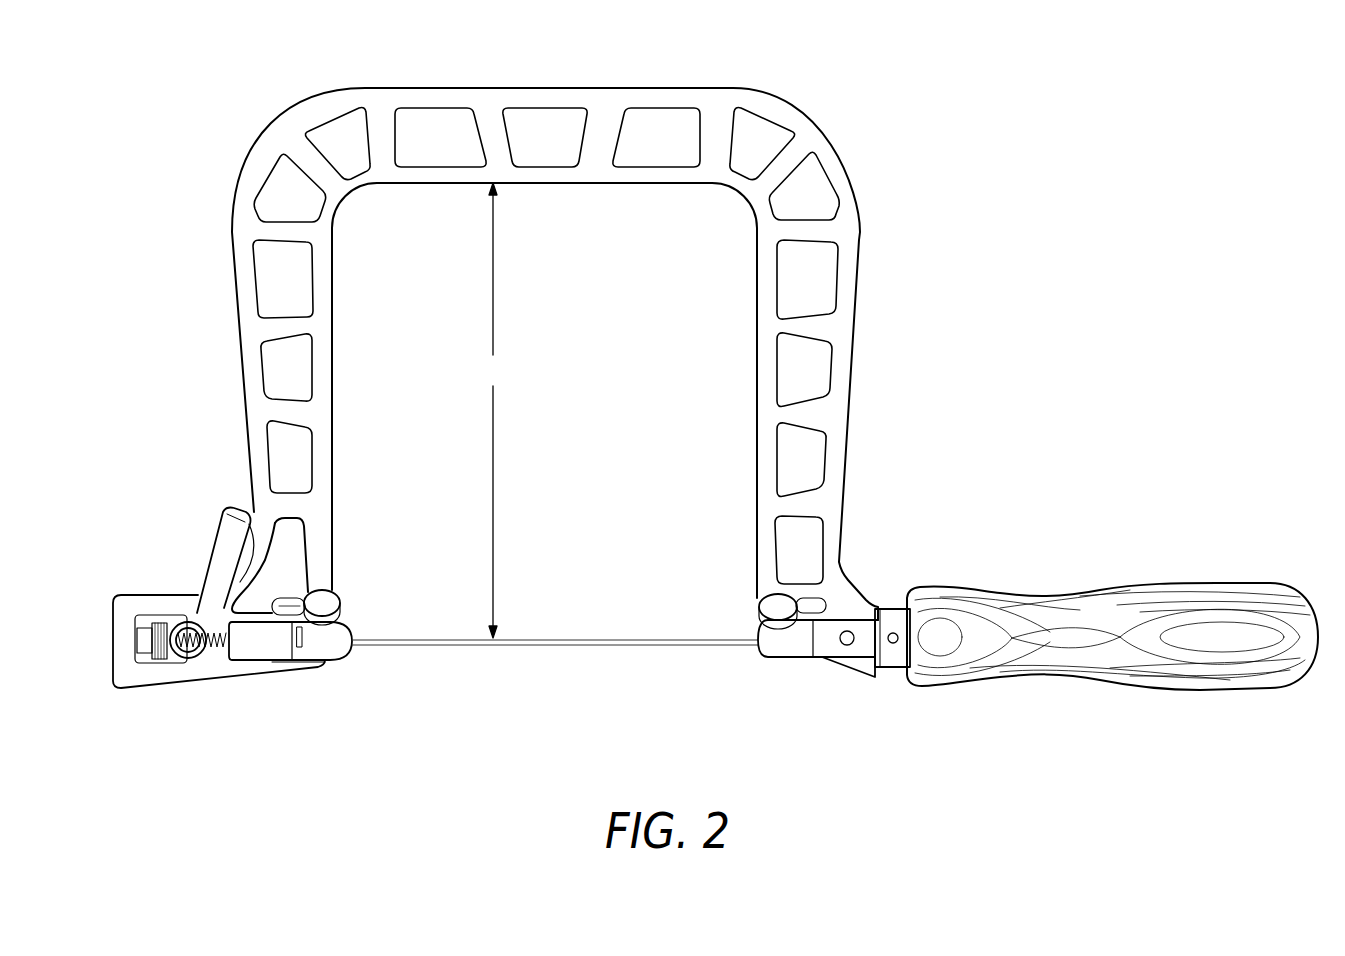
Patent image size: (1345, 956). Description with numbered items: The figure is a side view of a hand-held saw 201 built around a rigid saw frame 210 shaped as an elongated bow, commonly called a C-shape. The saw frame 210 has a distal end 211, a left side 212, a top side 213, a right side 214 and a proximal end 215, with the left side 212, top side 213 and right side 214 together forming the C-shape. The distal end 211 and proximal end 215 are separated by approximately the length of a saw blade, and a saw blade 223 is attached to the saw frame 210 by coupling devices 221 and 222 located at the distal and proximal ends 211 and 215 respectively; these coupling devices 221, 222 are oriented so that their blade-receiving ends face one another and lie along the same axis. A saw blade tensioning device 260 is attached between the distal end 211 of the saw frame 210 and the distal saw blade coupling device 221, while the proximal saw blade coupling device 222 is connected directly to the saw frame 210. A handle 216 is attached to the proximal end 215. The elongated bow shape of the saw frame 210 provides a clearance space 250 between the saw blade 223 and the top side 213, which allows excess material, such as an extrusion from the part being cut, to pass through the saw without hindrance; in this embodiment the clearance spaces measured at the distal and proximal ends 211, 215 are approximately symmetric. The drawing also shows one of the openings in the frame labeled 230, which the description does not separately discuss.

The hand-held saw 201 is at (948, 178).
The saw frame 210 is at (853, 368).
The distal end 211 is at (224, 686).
The left side 212 is at (345, 381).
The top side 213 is at (595, 188).
The right side 214 is at (755, 369).
The proximal end 215 is at (857, 672).
The handle 216 is at (1057, 595).
The distal saw blade coupling device 221 is at (342, 658).
The proximal saw blade coupling device 222 is at (770, 652).
The saw blade 223 is at (606, 644).
The lightening window in frame 230 is at (345, 151).
The clearance space 250 is at (496, 410).
The saw blade tensioning device 260 is at (182, 514).